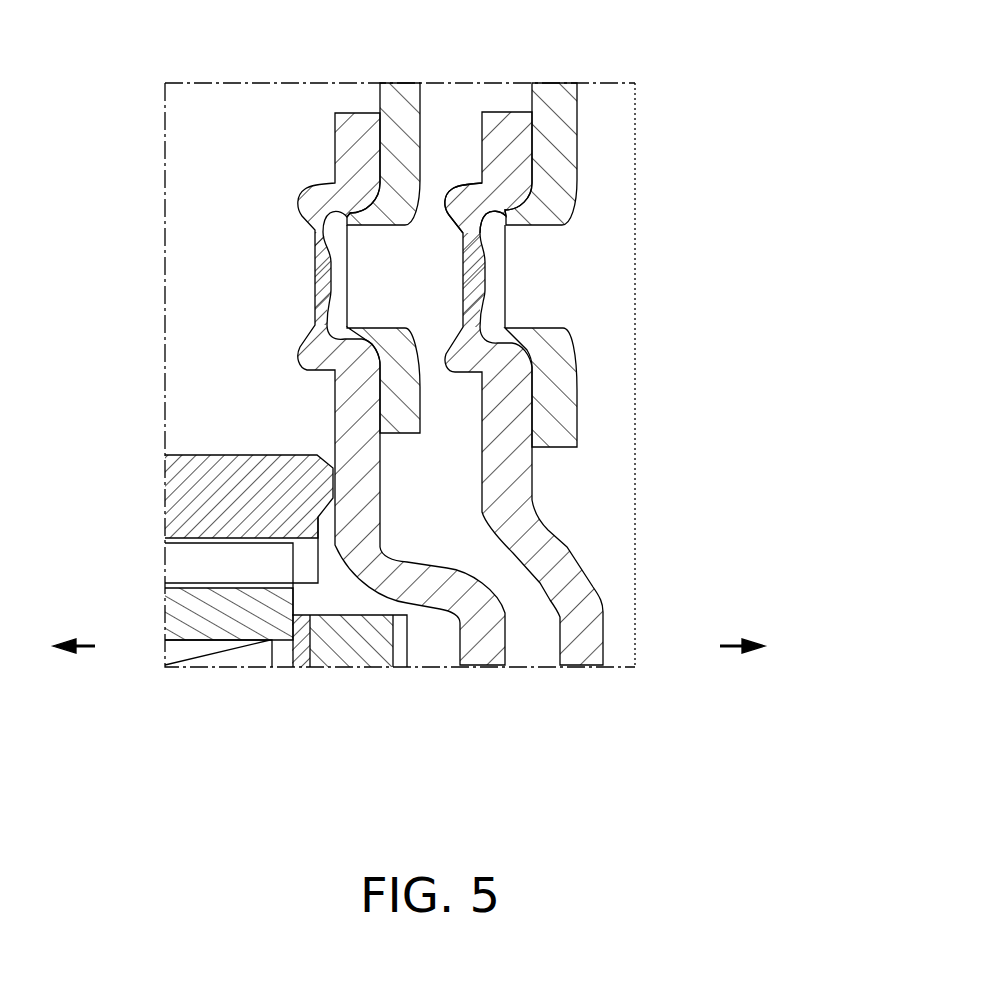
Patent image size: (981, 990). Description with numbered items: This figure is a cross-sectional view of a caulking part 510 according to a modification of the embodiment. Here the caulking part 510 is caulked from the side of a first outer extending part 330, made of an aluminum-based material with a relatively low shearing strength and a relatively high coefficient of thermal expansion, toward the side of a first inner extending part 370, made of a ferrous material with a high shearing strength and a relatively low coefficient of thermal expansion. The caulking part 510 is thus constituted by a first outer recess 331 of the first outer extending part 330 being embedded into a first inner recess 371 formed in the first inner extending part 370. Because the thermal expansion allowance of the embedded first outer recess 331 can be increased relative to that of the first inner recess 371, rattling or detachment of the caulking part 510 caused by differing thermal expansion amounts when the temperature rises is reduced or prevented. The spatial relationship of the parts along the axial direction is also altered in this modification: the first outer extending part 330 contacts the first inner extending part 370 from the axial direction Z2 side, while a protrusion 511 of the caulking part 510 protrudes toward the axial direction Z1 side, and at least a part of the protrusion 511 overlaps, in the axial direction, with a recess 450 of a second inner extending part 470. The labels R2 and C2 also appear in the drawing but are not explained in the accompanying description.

The first outer extending part 330 is at (575, 140).
The first outer recess 331 is at (505, 300).
The first inner extending part 370 is at (593, 588).
The first inner recess 371 is at (507, 247).
The recess 450 is at (457, 502).
The second inner extending part 470 is at (335, 419).
The caulking part 510 is at (607, 335).
The protrusion 511 is at (446, 188).
The region R2 is at (163, 458).
The capacitor C2 is at (350, 668).
The axial direction Z1 side Z1 is at (74, 668).
The axial direction Z2 side Z2 is at (742, 668).